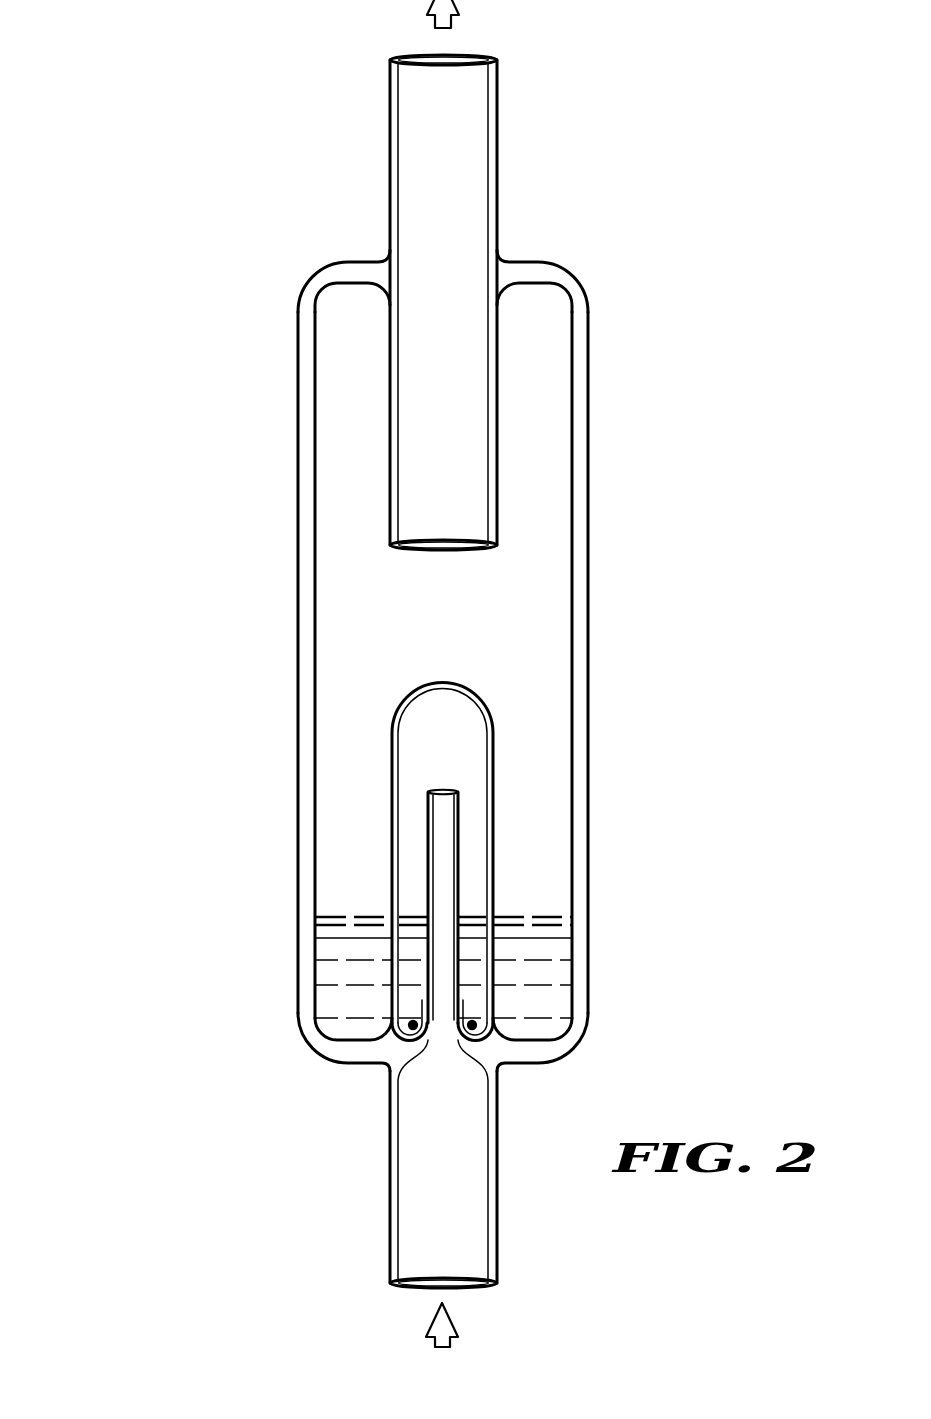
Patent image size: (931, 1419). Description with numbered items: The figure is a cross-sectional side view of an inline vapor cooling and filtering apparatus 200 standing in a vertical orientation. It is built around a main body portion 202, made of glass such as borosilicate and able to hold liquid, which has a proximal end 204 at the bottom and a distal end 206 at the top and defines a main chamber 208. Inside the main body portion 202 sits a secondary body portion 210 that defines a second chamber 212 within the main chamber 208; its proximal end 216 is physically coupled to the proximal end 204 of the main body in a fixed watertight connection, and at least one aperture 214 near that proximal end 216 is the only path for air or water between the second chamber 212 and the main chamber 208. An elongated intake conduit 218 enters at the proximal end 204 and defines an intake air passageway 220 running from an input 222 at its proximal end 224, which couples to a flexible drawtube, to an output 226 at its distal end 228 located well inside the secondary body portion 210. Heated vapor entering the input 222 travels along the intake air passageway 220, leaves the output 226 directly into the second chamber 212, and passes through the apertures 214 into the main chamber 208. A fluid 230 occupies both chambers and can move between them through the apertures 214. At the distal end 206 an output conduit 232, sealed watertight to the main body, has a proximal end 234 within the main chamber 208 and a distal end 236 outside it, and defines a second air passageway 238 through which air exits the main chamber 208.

The inline vapor cooling and filtering apparatus 200 is at (389, 673).
The main body portion 202 is at (384, 665).
The proximal end 204 is at (258, 1019).
The distal end 206 is at (284, 273).
The main chamber 208 is at (384, 625).
The secondary body portion 210 is at (443, 862).
The second chamber 212 is at (456, 720).
The aperture 214 is at (474, 1024).
The proximal end 216 is at (372, 1003).
The elongated intake conduit 218 is at (460, 1183).
The intake air passageway 220 is at (428, 1210).
The input 222 is at (478, 1303).
The proximal end 224 is at (513, 1257).
The output 226 is at (552, 889).
The distal end 228 is at (478, 818).
The fluid 230 is at (533, 938).
The output conduit 232 is at (479, 302).
The proximal end 234 is at (518, 515).
The distal end 236 is at (366, 76).
The second air passageway 238 is at (428, 159).